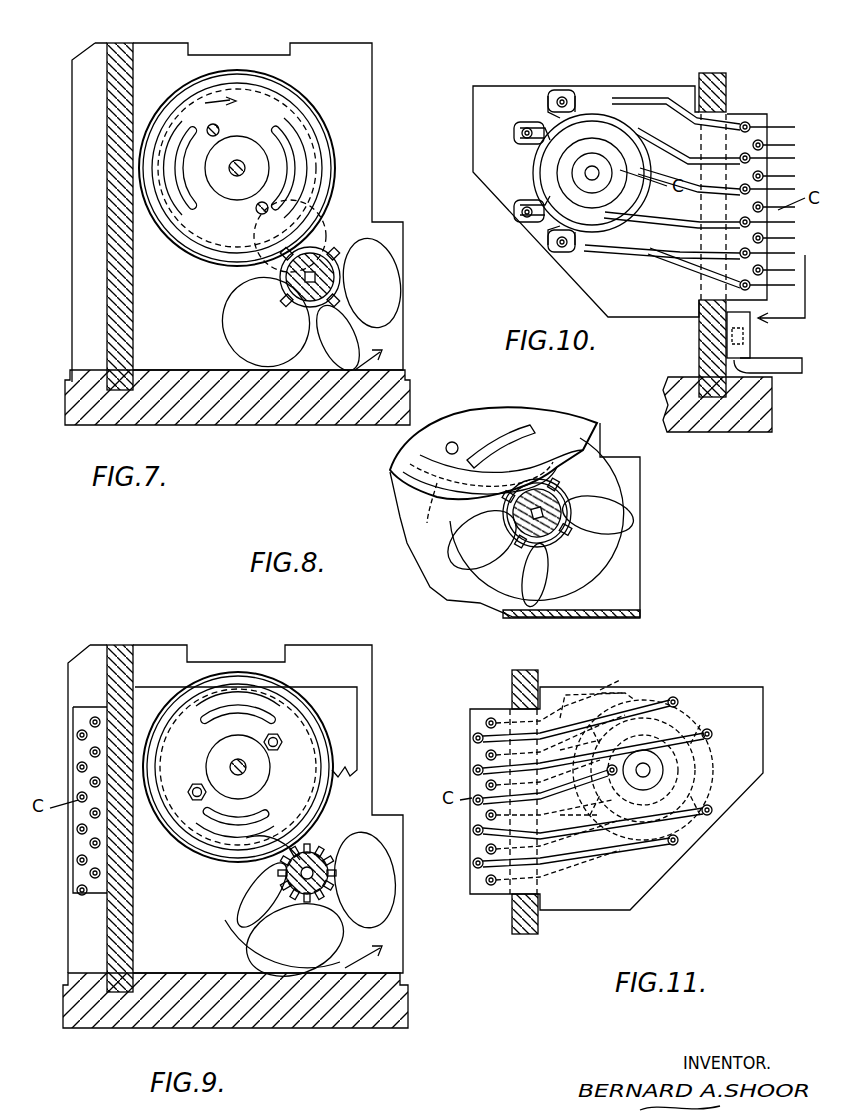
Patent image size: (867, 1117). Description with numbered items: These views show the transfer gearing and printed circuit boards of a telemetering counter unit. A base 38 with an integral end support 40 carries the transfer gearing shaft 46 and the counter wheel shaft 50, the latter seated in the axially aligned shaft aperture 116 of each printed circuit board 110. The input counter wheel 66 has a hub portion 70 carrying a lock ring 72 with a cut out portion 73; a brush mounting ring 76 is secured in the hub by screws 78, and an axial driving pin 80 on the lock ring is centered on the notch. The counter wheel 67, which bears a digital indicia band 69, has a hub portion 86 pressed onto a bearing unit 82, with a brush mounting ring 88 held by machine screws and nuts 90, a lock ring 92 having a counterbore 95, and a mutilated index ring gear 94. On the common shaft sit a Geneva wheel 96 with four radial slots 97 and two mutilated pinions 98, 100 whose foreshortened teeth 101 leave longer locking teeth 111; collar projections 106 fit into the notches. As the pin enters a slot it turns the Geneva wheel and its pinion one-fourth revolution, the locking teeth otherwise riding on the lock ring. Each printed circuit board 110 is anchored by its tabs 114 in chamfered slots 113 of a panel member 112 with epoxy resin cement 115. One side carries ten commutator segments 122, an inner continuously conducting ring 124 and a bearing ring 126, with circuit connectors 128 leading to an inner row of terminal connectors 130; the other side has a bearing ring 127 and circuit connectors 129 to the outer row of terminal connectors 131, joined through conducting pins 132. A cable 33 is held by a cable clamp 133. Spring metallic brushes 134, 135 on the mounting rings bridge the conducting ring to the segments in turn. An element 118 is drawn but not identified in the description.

In FIG. 10, the cable 33 is at (790, 368).
In FIG. 7, the base 38 is at (272, 418).
In FIG. 8, the base 38 is at (620, 617).
In FIG. 10, the base 38 is at (768, 426).
In FIG. 9, the base 38 is at (393, 1010).
In FIG. 7, the end support 40 is at (360, 55).
In FIG. 8, the end support 40 is at (593, 606).
In FIG. 9, the end support 40 is at (155, 648).
In FIG. 7, the transfer gearing shaft 46 is at (308, 302).
In FIG. 8, the transfer gearing shaft 46 is at (548, 514).
In FIG. 9, the transfer gearing shaft 46 is at (330, 880).
In FIG. 7, the counter wheel shaft 50 is at (237, 168).
In FIG. 9, the counter wheel shaft 50 is at (230, 766).
In FIG. 7, the input counter wheel 66 is at (178, 90).
In FIG. 8, the input counter wheel 66 is at (555, 418).
In FIG. 9, the counter wheel 67 is at (320, 712).
In FIG. 7, the digital indicia bands 69 is at (318, 120).
In FIG. 9, the digital indicia bands 69 is at (326, 732).
In FIG. 7, the hub portion 70 is at (150, 245).
In FIG. 8, the hub portion 70 is at (412, 452).
In FIG. 7, the lock ring 72 is at (195, 228).
In FIG. 8, the lock ring 72 is at (420, 486).
In FIG. 7, the cut out portion 73 is at (300, 215).
In FIG. 8, the cut out portion 73 is at (415, 470).
In FIG. 7, the brush mounting ring 76 is at (270, 112).
In FIG. 7, the screws 78 is at (216, 126).
In FIG. 8, the screws 78 is at (452, 440).
In FIG. 7, the axial driving pin 80 is at (372, 212).
In FIG. 8, the axial driving pin 80 is at (422, 511).
In FIG. 7, the bearing unit 82 is at (292, 290).
In FIG. 9, the bearing unit 82 is at (318, 888).
In FIG. 9, the hub portion 86 is at (330, 762).
In FIG. 9, the brush mounting ring 88 is at (276, 690).
In FIG. 9, the machine screws and nuts 90 is at (283, 742).
In FIG. 9, the lock ring 92 is at (275, 715).
In FIG. 9, the mutilated index ring gear 94 is at (316, 830).
In FIG. 9, the counterbore 95 is at (320, 800).
In FIG. 7, the Geneva wheel 96 is at (392, 276).
In FIG. 8, the Geneva wheel 96 is at (585, 578).
In FIG. 9, the Geneva wheel 96 is at (390, 925).
In FIG. 7, the radial slots 97 is at (215, 265).
In FIG. 8, the radial slots 97 is at (556, 456).
In FIG. 9, the radial slots 97 is at (375, 842).
In FIG. 7, the mutilated pinion 98 is at (340, 298).
In FIG. 8, the mutilated pinion 98 is at (600, 552).
In FIG. 9, the mutilated pinion 100 is at (300, 900).
In FIG. 9, the foreshortened teeth 101 is at (312, 852).
In FIG. 7, the projections 106 is at (295, 275).
In FIG. 8, the projections 106 is at (567, 512).
In FIG. 10, the printed circuit board 110 is at (486, 90).
In FIG. 9, the printed circuit board 110 is at (330, 695).
In FIG. 11, the printed circuit board 110 is at (750, 700).
In FIG. 7, the locking teeth 111 is at (360, 258).
In FIG. 8, the locking teeth 111 is at (562, 503).
In FIG. 9, the locking teeth 111 is at (332, 870).
In FIG. 7, the panel member 112 is at (118, 320).
In FIG. 10, the panel member 112 is at (712, 76).
In FIG. 9, the panel member 112 is at (118, 645).
In FIG. 11, the panel member 112 is at (528, 934).
In FIG. 10, the chamfered slots 113 is at (728, 98).
In FIG. 11, the chamfered slots 113 is at (520, 905).
In FIG. 10, the printed circuit board tabs 114 is at (765, 118).
In FIG. 9, the printed circuit board tabs 114 is at (85, 705).
In FIG. 11, the printed circuit board tabs 114 is at (472, 722).
In FIG. 10, the epoxy resin cement 115 is at (728, 110).
In FIG. 11, the epoxy resin cement 115 is at (514, 900).
In FIG. 10, the shaft aperture 116 is at (594, 165).
In FIG. 11, the shaft aperture 116 is at (643, 778).
In FIG. 7, the bracket 118 is at (104, 40).
In FIG. 9, the bracket 118 is at (105, 642).
In FIG. 10, the commutator segments 122 is at (552, 108).
In FIG. 11, the commutator segments 122 is at (730, 790).
In FIG. 10, the continuously conducting ring 124 is at (617, 135).
In FIG. 11, the continuously conducting ring 124 is at (700, 742).
In FIG. 10, the bearing ring 126 is at (583, 190).
In FIG. 11, the bearing ring 127 is at (655, 770).
In FIG. 10, the circuit connectors 128 is at (650, 245).
In FIG. 11, the circuit connectors 128 is at (580, 705).
In FIG. 11, the circuit connectors 129 is at (638, 750).
In FIG. 10, the inner row of terminal connectors 130 is at (698, 288).
In FIG. 9, the inner row of terminal connectors 130 is at (95, 885).
In FIG. 11, the inner row of terminal connectors 130 is at (489, 718).
In FIG. 10, the outer row of terminal connectors 131 is at (762, 140).
In FIG. 9, the outer row of terminal connectors 131 is at (78, 868).
In FIG. 11, the outer row of terminal connectors 131 is at (472, 740).
In FIG. 10, the conducting pins 132 is at (522, 132).
In FIG. 11, the conducting pins 132 is at (680, 700).
In FIG. 10, the cable clamp 133 is at (752, 338).
In FIG. 7, the spring metallic brush 134 is at (183, 178).
In FIG. 9, the spring metallic brush 134 is at (236, 710).
In FIG. 7, the spring metallic brush 135 is at (290, 142).
In FIG. 8, the spring metallic brush 135 is at (480, 442).
In FIG. 9, the spring metallic brush 135 is at (210, 835).